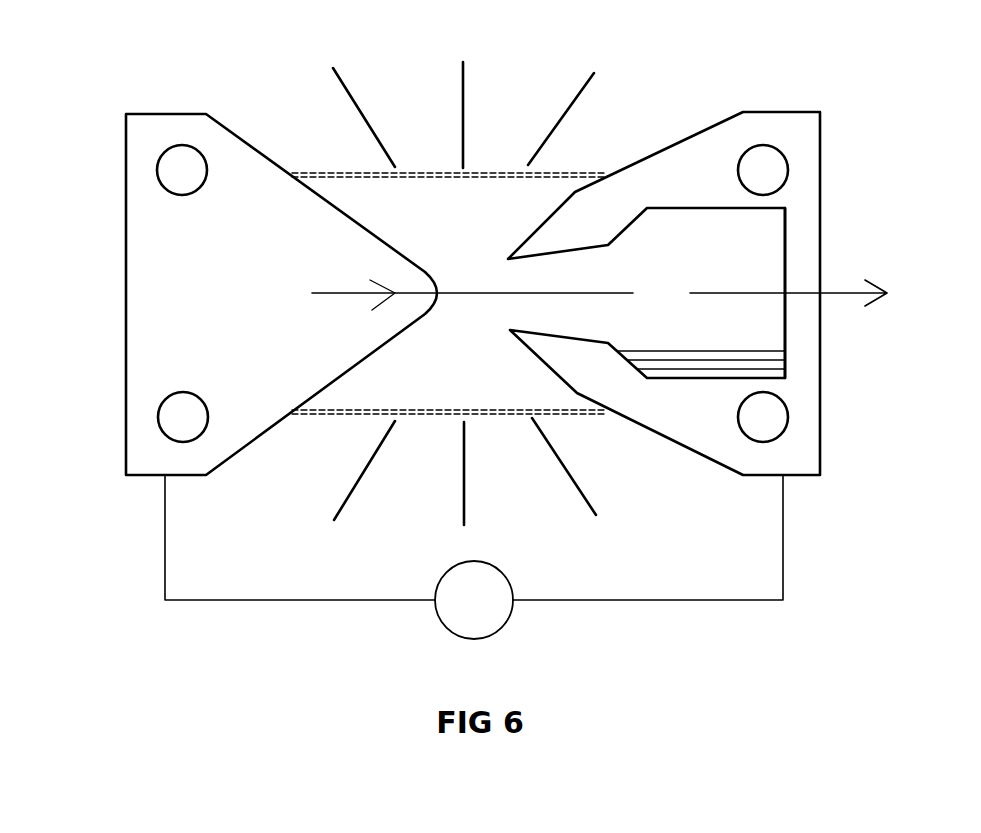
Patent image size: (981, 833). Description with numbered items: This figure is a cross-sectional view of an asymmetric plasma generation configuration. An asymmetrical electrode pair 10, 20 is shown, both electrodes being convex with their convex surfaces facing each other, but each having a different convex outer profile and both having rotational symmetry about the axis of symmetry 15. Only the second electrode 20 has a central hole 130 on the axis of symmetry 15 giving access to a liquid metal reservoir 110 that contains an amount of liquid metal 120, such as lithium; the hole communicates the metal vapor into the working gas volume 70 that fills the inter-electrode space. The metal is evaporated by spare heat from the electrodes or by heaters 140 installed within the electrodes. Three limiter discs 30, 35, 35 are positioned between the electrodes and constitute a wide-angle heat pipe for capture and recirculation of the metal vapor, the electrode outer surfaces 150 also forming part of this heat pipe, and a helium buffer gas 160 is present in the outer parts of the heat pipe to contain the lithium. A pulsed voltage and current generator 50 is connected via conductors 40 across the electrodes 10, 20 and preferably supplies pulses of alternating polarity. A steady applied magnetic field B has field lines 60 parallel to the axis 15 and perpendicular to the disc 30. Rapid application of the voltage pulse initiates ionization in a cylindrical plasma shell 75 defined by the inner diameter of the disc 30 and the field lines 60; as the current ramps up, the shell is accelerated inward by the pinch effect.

The electrode 10 is at (252, 142).
The axis of symmetry 15 is at (835, 288).
The electrode 20 is at (760, 105).
The limiter disc 30 is at (480, 97).
The limiter disc 35 is at (365, 95).
The conductors 40 is at (167, 513).
The pulsed voltage and current generator 50 is at (517, 610).
The magnetic field lines 60 is at (307, 283).
The working gas 70 is at (483, 378).
The plasma shell 75 is at (578, 170).
The liquid metal reservoir 110 is at (788, 358).
The liquid metal 120 is at (668, 342).
The central hole 130 is at (497, 273).
The heaters 140 is at (155, 155).
The electrode outer surfaces 150 is at (260, 438).
The helium buffer gas 160 is at (449, 476).